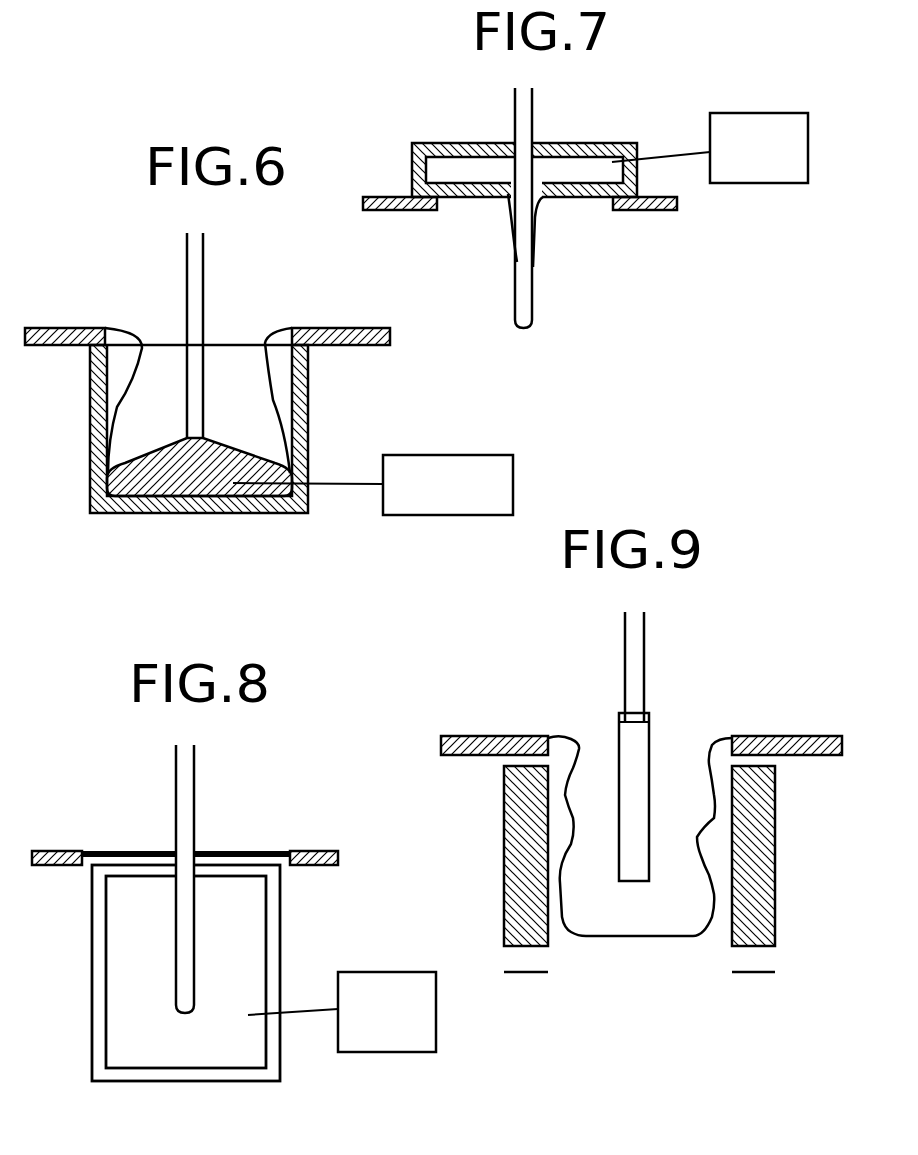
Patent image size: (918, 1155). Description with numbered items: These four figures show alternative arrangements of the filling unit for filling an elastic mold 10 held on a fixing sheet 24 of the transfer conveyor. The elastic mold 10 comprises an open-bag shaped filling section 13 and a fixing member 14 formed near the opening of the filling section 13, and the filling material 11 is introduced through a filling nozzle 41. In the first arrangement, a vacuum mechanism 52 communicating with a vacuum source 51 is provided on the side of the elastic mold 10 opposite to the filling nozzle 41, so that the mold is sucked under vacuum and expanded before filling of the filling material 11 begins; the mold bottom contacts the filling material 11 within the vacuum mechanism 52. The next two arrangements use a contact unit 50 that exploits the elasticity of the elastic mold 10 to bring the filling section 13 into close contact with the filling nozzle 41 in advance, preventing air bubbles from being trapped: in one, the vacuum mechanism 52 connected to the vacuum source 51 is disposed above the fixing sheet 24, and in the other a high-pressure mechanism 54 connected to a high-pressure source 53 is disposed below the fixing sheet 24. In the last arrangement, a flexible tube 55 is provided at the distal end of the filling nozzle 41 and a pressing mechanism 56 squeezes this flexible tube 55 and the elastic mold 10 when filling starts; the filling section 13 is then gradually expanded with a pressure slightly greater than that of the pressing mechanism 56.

In FIG. 6, the elastic mold 10 is at (180, 376).
In FIG. 7, the elastic mold 10 is at (527, 264).
In FIG. 8, the elastic mold 10 is at (176, 913).
In FIG. 9, the elastic mold 10 is at (640, 835).
In FIG. 6, the filling material 11 is at (237, 483).
In FIG. 6, the filling section 13 is at (107, 397).
In FIG. 7, the filling section 13 is at (537, 317).
In FIG. 9, the filling section 13 is at (649, 940).
In FIG. 7, the fixing member 14 is at (578, 197).
In FIG. 8, the fixing member 14 is at (260, 851).
In FIG. 6, the fixing sheet 24 is at (380, 347).
In FIG. 7, the fixing sheet 24 is at (657, 210).
In FIG. 8, the fixing sheet 24 is at (57, 851).
In FIG. 9, the fixing sheet 24 is at (800, 736).
In FIG. 6, the filling nozzle 41 is at (200, 240).
In FIG. 7, the filling nozzle 41 is at (523, 290).
In FIG. 8, the filling nozzle 41 is at (184, 988).
In FIG. 9, the filling nozzle 41 is at (630, 642).
In FIG. 7, the contact unit 50 is at (610, 124).
In FIG. 8, the contact unit 50 is at (264, 1002).
In FIG. 6, the vacuum source 51 is at (461, 462).
In FIG. 7, the vacuum source 51 is at (755, 172).
In FIG. 6, the vacuum mechanism 52 is at (120, 512).
In FIG. 7, the vacuum mechanism 52 is at (597, 143).
In FIG. 8, the vacuum mechanism 52 is at (147, 1073).
In FIG. 8, the high-pressure source 53 is at (391, 1054).
In FIG. 8, the high-pressure mechanism 54 is at (250, 935).
In FIG. 9, the flexible tube 55 is at (628, 741).
In FIG. 9, the pressing mechanism 56 is at (520, 842).